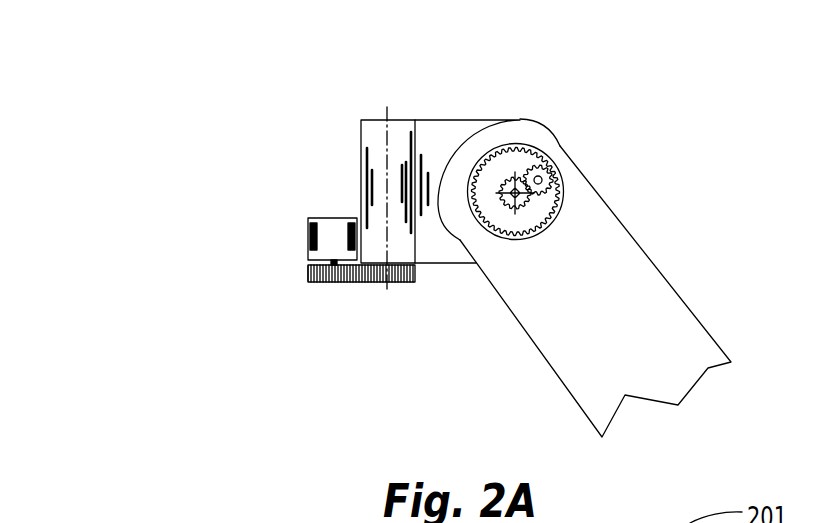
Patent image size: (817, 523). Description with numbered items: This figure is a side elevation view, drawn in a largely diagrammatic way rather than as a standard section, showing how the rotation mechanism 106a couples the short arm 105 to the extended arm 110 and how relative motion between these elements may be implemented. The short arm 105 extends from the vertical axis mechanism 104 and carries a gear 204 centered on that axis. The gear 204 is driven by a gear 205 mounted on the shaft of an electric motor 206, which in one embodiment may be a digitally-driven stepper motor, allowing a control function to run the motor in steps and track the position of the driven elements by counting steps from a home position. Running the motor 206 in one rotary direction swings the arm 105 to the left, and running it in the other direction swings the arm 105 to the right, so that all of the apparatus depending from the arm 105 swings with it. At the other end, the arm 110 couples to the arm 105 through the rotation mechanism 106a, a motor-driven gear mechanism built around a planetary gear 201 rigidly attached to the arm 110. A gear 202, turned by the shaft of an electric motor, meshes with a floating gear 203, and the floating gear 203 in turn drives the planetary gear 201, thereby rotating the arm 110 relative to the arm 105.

The vertical axis mechanism 104 is at (376, 120).
The short arm 105 is at (445, 120).
The planetary gear 201 is at (537, 142).
The rotation mechanism 106a is at (558, 149).
The extended arm 110 is at (670, 323).
The gear 202 is at (512, 193).
The floating gear 203 is at (565, 180).
The gear 204 is at (402, 283).
The gear 205 is at (308, 274).
The electric motor 206 is at (310, 240).